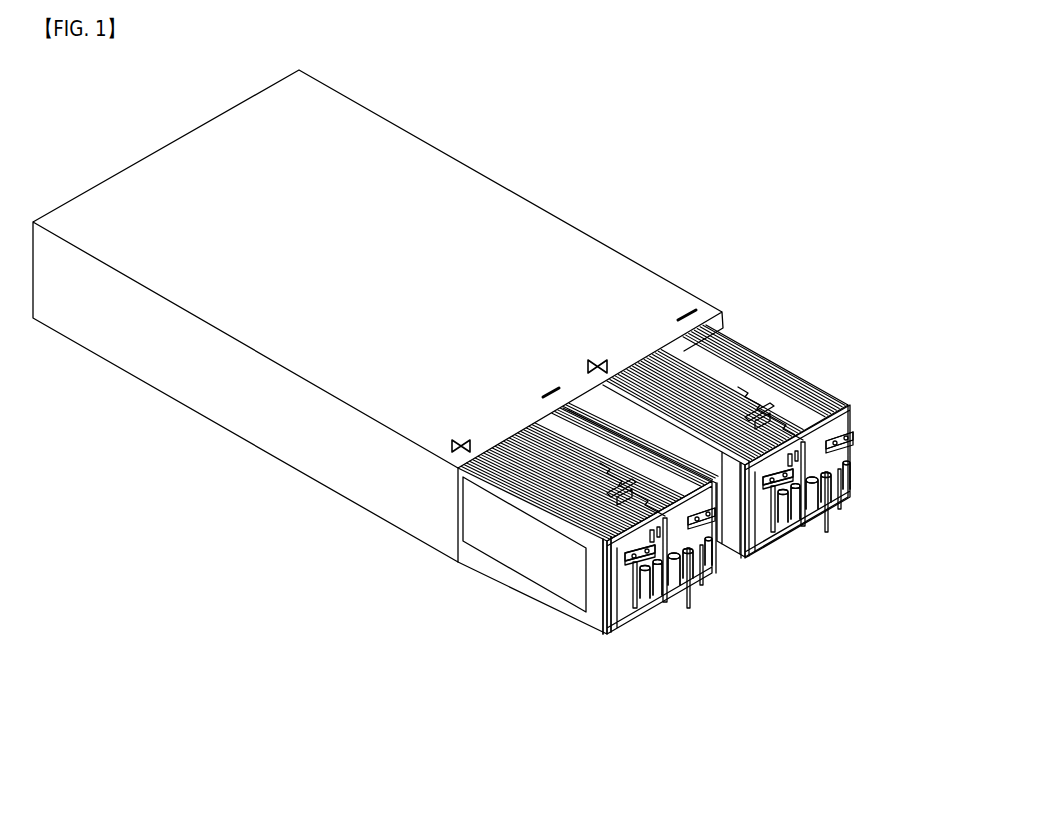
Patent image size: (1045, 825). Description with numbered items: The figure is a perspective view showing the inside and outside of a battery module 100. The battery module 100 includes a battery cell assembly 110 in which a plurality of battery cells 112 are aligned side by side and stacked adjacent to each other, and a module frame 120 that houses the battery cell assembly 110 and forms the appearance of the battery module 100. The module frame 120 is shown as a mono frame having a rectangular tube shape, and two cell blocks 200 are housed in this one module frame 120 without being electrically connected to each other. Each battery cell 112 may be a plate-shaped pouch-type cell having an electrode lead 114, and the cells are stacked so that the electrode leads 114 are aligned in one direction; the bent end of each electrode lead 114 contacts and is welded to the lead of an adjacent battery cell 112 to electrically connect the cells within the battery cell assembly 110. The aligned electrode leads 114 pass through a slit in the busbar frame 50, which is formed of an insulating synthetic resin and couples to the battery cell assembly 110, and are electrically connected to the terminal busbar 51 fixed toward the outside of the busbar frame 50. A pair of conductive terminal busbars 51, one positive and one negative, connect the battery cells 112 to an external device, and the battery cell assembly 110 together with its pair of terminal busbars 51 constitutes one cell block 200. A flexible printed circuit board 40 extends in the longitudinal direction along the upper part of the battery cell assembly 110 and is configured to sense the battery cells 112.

The battery module 100 is at (524, 84).
The module frame 120 is at (646, 267).
The cell block 200 is at (596, 691).
The battery cell assembly 110 is at (523, 598).
The battery cell 112 is at (507, 543).
The electrode lead 114 is at (713, 565).
The flexible printed circuit board 40 is at (757, 397).
The busbar frame 50 is at (683, 585).
The terminal busbar 51 is at (606, 632).